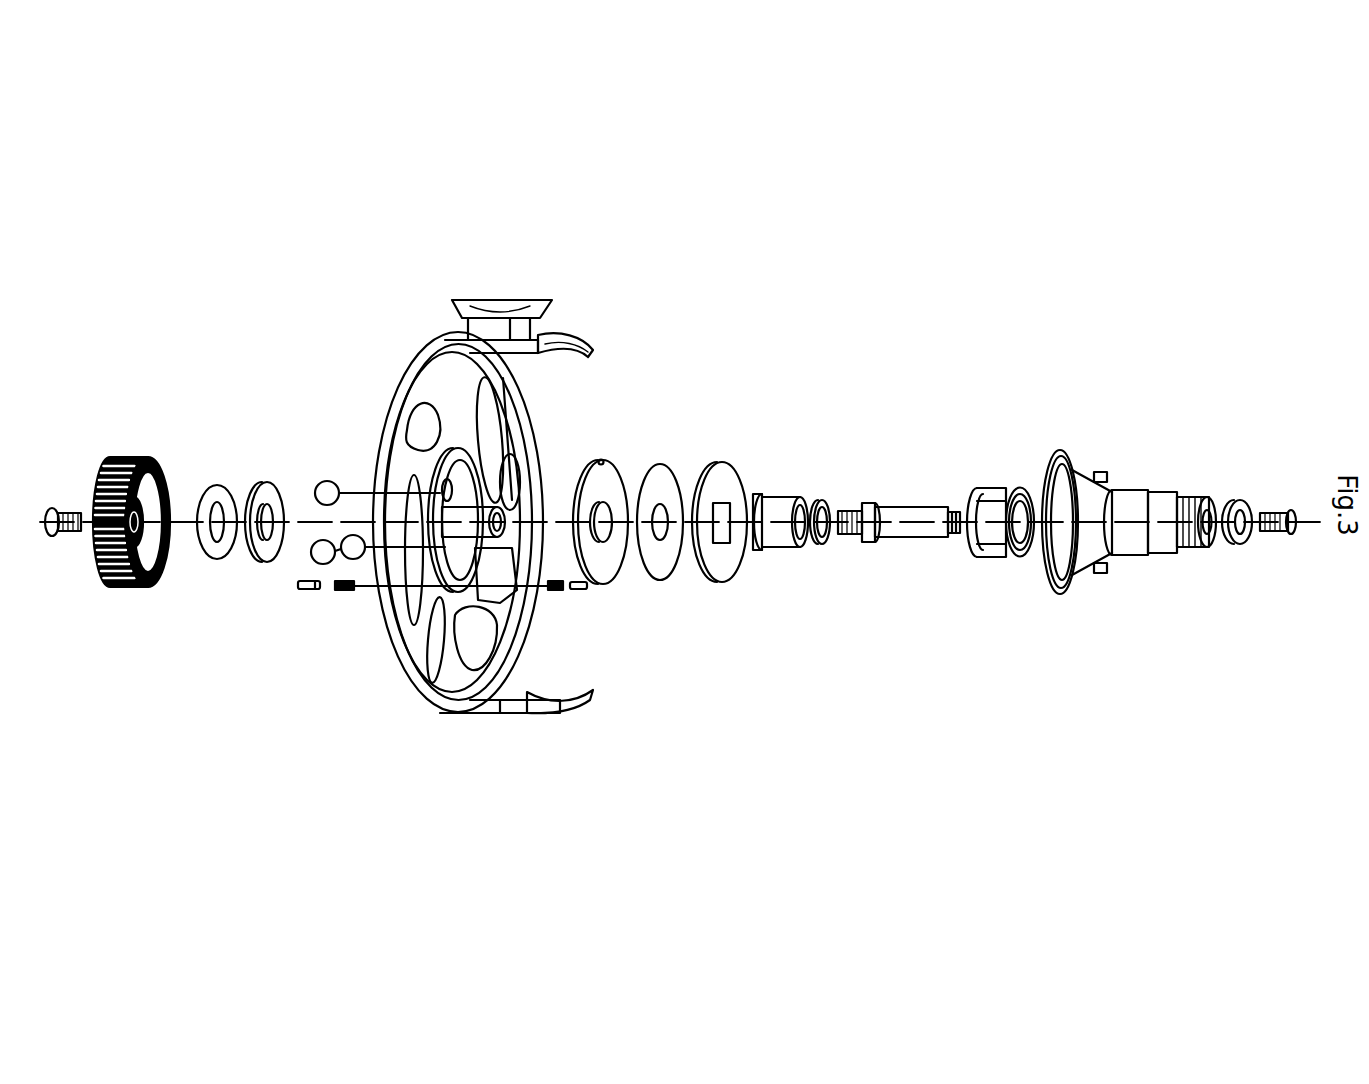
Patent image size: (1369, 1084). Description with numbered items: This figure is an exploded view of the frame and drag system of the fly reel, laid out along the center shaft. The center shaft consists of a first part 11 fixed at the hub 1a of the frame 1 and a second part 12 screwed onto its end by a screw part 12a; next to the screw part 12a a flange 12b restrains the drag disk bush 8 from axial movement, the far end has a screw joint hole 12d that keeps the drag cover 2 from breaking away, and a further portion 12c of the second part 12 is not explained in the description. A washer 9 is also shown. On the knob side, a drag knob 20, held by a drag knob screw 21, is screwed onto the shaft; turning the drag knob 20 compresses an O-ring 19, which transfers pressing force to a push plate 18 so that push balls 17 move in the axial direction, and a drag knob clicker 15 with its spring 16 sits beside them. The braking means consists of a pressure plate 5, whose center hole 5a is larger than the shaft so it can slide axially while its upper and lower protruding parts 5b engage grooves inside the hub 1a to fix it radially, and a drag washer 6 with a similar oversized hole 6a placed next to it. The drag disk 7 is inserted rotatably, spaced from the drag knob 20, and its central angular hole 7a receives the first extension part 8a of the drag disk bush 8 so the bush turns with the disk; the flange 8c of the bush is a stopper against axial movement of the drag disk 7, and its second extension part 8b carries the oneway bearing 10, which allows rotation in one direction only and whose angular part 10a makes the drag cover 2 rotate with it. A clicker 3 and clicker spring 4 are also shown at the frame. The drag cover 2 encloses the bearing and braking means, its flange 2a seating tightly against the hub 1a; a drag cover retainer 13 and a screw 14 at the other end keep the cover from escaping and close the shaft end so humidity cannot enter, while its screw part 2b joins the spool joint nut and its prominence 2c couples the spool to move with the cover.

The frame 1 is at (405, 372).
The hub 1a is at (440, 592).
The drag cover 2 is at (1129, 474).
The flange 2a is at (1062, 454).
The screw part 2b is at (1189, 498).
The prominence 2c is at (1102, 472).
The clicker 3 is at (580, 592).
The clicker spring 4 is at (552, 592).
The pressure plate 5 is at (605, 512).
The hole 5a is at (605, 580).
The protruding parts 5b is at (601, 461).
The drag washer 6 is at (666, 512).
The hole 6a is at (663, 534).
The drag disk 7 is at (723, 512).
The angular part 7a is at (727, 540).
The drag disk bush 8 is at (781, 509).
The No. 1 extension part 8a is at (758, 498).
The No. 2 extension part 8b is at (780, 532).
The flange 8c is at (763, 492).
The washer 9 is at (821, 504).
The oneway bearing 10 is at (1000, 486).
The angular part 10a is at (995, 548).
The No. 1 part 11 is at (490, 506).
The No. 2 part 12 is at (911, 509).
The screw part 12a is at (866, 504).
The flange 12b is at (882, 497).
The shaft tip 12c is at (918, 512).
The screw joint hole 12d is at (958, 535).
The drag cover retainer 13 is at (1240, 545).
The screw 14 is at (1290, 535).
The drag knob clicker 15 is at (301, 591).
The spring 16 is at (352, 591).
The push balls 17 is at (327, 481).
The push plate 18 is at (265, 482).
The O-ring 19 is at (212, 486).
The drag knob 20 is at (130, 457).
The drag knob screw 21 is at (63, 512).